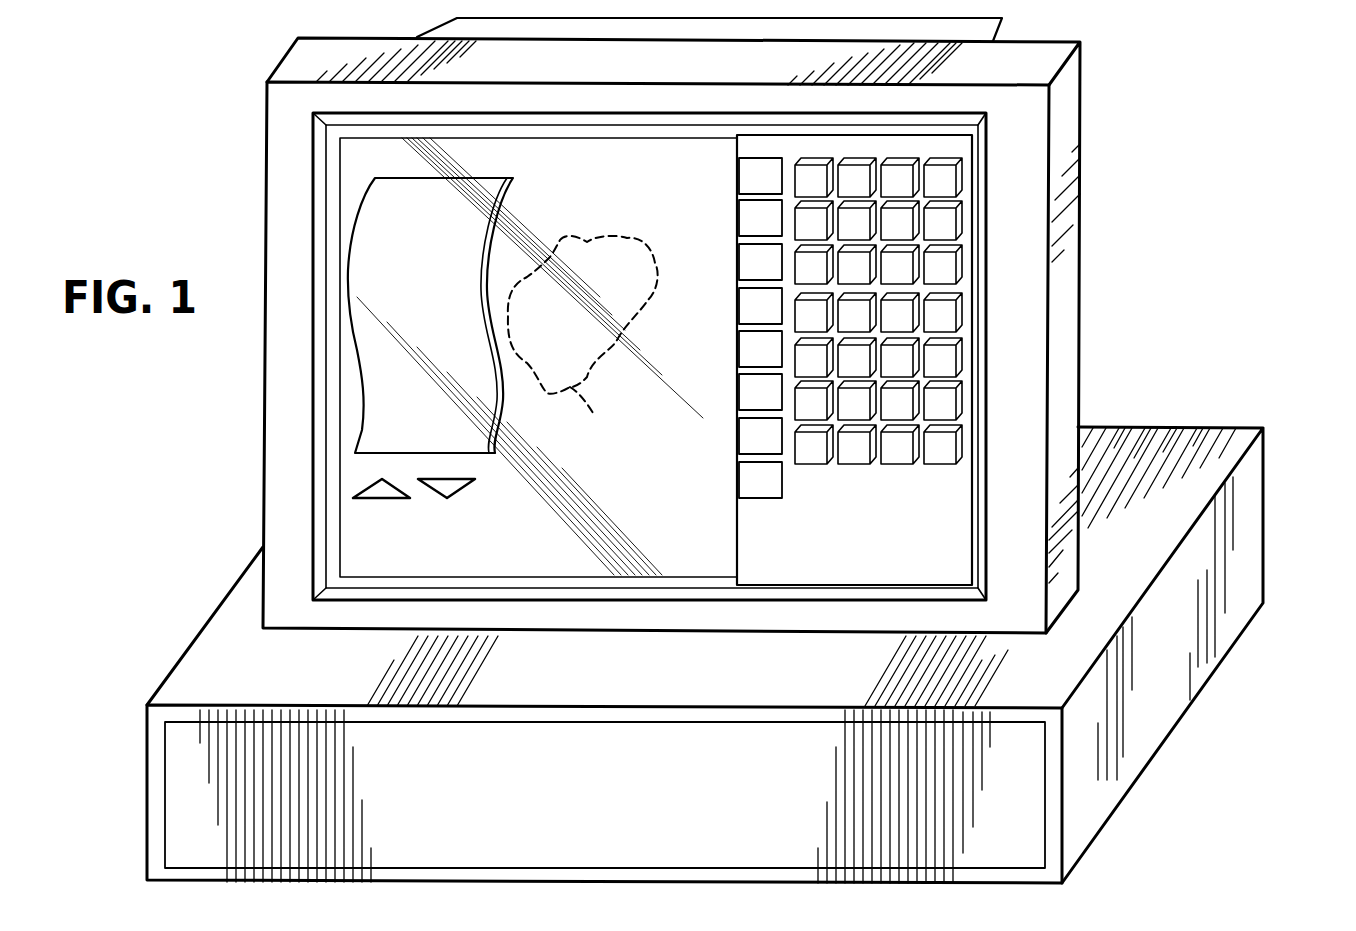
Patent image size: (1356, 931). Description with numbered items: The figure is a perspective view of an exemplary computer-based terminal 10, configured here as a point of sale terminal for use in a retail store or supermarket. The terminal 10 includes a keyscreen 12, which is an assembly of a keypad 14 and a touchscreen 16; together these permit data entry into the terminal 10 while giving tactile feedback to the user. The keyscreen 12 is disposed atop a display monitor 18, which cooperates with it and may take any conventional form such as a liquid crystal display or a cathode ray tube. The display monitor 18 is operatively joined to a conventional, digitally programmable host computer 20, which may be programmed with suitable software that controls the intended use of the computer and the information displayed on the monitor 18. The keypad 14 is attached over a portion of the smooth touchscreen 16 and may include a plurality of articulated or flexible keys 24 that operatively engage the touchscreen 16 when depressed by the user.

The computer-based terminal 10 is at (1118, 197).
The keyscreen 12 is at (825, 586).
The keypad 14 is at (885, 292).
The touchscreen 16 is at (604, 356).
The display monitor 18 is at (597, 420).
The host computer 20 is at (1247, 430).
The keys 24 is at (857, 471).